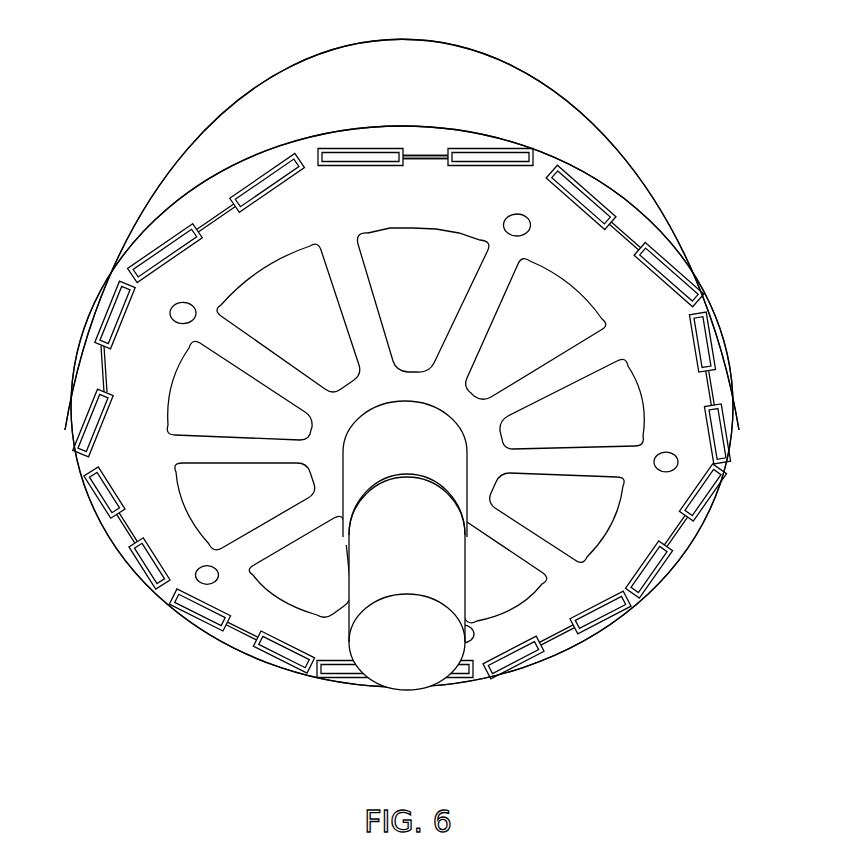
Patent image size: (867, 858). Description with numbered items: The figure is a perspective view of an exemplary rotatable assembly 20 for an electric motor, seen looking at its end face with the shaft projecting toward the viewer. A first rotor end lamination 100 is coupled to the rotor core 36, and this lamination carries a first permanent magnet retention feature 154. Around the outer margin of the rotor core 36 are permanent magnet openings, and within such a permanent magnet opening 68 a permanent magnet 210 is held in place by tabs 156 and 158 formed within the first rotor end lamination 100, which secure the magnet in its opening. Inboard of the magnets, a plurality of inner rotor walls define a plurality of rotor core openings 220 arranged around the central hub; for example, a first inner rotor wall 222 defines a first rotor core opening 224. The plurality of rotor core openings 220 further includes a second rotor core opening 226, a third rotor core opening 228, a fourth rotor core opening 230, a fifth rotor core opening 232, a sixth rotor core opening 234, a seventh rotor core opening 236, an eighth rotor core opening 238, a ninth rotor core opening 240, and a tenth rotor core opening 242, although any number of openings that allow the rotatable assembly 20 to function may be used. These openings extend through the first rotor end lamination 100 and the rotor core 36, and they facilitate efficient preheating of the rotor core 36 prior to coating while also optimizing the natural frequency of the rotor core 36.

The rotatable assembly 20 is at (538, 27).
The rotor core 36 is at (558, 122).
The permanent magnet opening 68 is at (360, 120).
The first rotor end lamination 100 is at (622, 190).
The first permanent magnet retention feature 154 is at (411, 103).
The tab 156 is at (490, 90).
The tab 158 is at (430, 190).
The permanent magnet 210 is at (318, 152).
The plurality of rotor core openings 220 is at (608, 508).
The first inner rotor wall 222 is at (642, 388).
The first rotor core opening 224 is at (624, 427).
The second rotor core opening 226 is at (628, 594).
The third rotor core opening 228 is at (519, 588).
The fourth rotor core opening 230 is at (340, 627).
The fifth rotor core opening 232 is at (278, 587).
The sixth rotor core opening 234 is at (203, 517).
The seventh rotor core opening 236 is at (187, 388).
The eighth rotor core opening 238 is at (240, 297).
The ninth rotor core opening 240 is at (413, 247).
The tenth rotor core opening 242 is at (567, 292).